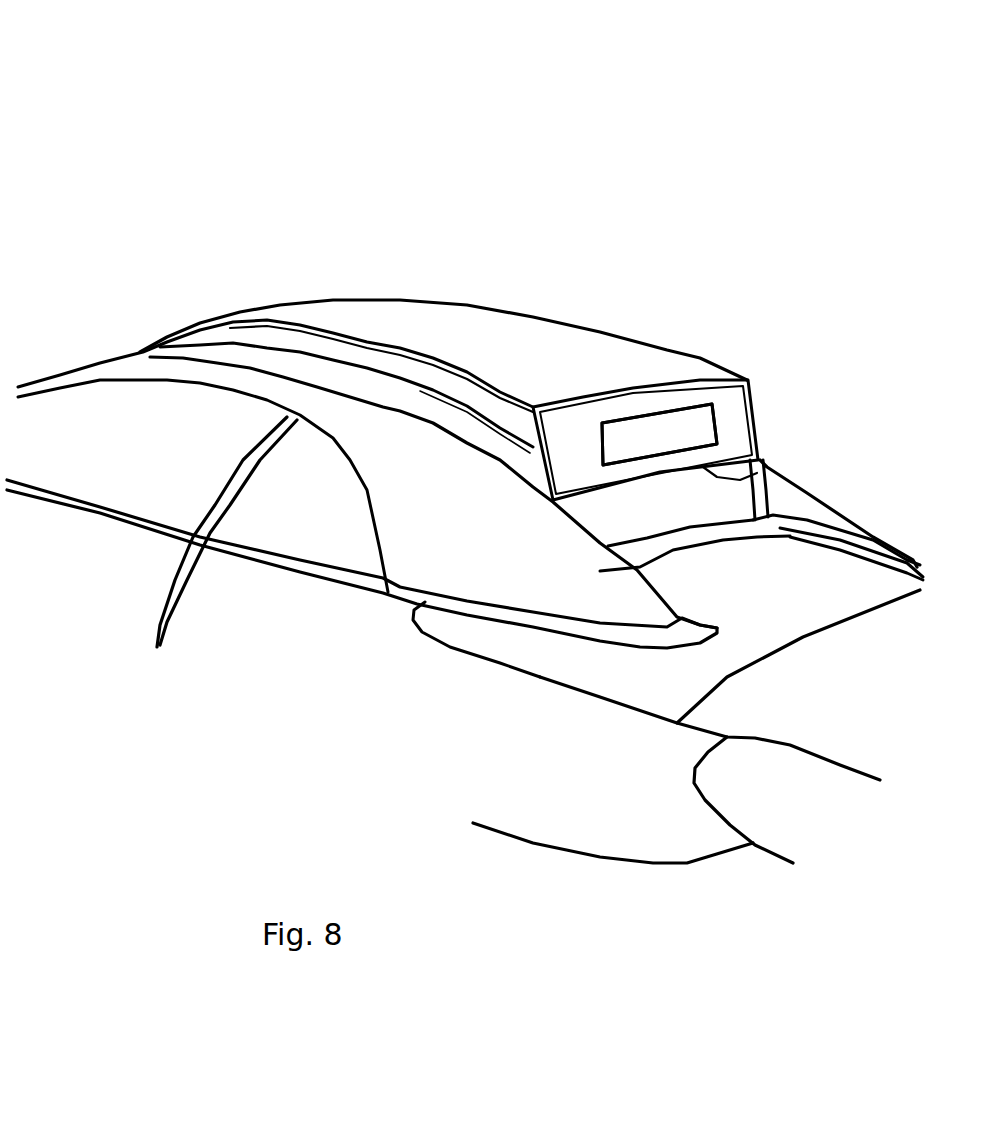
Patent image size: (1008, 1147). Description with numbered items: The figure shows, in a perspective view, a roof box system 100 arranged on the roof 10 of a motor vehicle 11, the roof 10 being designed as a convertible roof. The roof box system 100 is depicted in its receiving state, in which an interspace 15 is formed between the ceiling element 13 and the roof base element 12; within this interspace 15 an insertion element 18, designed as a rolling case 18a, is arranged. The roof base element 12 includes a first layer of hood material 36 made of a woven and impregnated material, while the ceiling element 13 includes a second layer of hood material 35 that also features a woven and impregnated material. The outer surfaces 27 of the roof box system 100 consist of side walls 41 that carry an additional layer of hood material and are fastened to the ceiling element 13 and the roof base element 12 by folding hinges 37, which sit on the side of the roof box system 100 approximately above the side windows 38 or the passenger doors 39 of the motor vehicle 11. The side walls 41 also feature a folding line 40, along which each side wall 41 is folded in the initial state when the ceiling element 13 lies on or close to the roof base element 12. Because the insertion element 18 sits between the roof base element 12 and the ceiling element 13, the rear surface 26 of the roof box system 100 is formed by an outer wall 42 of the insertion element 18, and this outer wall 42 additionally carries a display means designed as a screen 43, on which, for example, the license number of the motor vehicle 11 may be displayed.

The roof box system 100 is at (100, 45).
The roof 10 is at (443, 207).
The motor vehicle 11 is at (676, 828).
The roof base element 12 is at (759, 457).
The ceiling element 13 is at (250, 391).
The interspace 15 is at (731, 591).
The insertion element 18 is at (674, 365).
The rolling case 18a is at (710, 365).
The rear surface 26 is at (664, 297).
The outer surfaces 27 is at (275, 313).
The second layer of hood material 35 is at (577, 256).
The first layer of hood material 36 is at (800, 546).
The folding hinges 37 is at (330, 299).
The side windows 38 is at (227, 567).
The passenger doors 39 is at (362, 584).
The folding line 40 is at (433, 365).
The side walls 41 is at (371, 550).
The outer wall 42 is at (670, 351).
The screen 43 is at (491, 634).